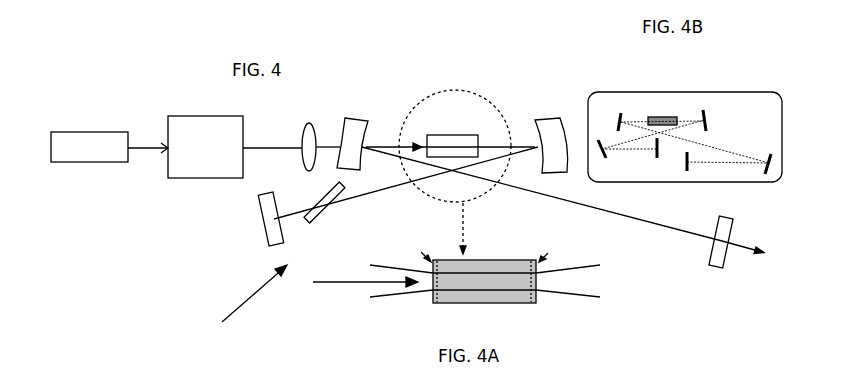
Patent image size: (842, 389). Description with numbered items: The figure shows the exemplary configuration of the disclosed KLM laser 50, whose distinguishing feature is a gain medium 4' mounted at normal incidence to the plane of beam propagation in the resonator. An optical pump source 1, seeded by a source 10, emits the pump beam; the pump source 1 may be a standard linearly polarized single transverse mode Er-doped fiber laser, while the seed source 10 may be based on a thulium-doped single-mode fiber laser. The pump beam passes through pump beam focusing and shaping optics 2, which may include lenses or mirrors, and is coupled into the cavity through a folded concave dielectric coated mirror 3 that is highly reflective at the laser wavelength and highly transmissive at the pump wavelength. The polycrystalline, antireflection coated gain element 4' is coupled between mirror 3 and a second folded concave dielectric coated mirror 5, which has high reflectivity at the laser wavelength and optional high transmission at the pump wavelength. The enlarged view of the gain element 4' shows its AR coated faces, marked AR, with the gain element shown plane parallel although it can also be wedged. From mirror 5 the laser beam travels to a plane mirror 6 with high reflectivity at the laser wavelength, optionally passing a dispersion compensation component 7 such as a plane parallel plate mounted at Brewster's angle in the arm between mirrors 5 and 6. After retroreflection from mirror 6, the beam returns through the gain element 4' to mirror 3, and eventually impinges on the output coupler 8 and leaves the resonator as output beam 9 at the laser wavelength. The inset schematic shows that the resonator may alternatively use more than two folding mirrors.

In FIG. 4, the seed laser 10 is at (80, 156).
In FIG. 4, the optical pump source 1 is at (205, 137).
In FIG. 4, the pump beam focusing and shaping optics 2 is at (309, 134).
In FIG. 4, the folded concave dielectric coated mirror 3 is at (352, 133).
In FIG. 4, the gain medium 4' is at (452, 132).
In FIG. 4A, the gain medium 4' is at (484, 268).
In FIG. 4, the folded concave dielectric coated mirror 5 is at (551, 135).
In FIG. 4, the plane mirror 6 is at (273, 194).
In FIG. 4, the dispersion compensation component 7 is at (323, 209).
In FIG. 4, the output coupler 8 is at (718, 242).
In FIG. 4, the output beam 9 is at (743, 256).
In FIG. 4, the KLM laser 50 is at (244, 309).
In FIG. 4A, the antireflection coating AR is at (481, 250).